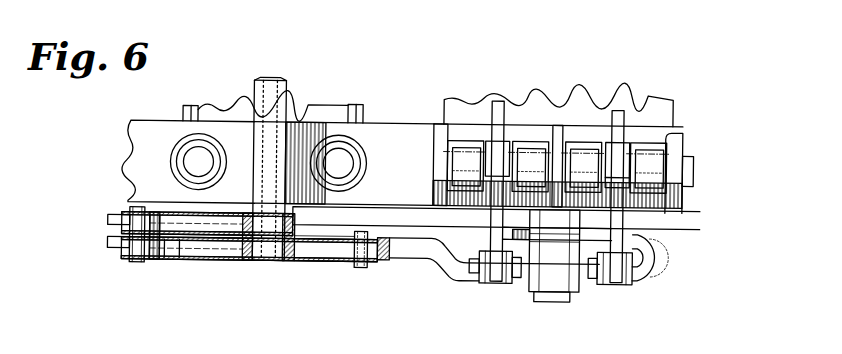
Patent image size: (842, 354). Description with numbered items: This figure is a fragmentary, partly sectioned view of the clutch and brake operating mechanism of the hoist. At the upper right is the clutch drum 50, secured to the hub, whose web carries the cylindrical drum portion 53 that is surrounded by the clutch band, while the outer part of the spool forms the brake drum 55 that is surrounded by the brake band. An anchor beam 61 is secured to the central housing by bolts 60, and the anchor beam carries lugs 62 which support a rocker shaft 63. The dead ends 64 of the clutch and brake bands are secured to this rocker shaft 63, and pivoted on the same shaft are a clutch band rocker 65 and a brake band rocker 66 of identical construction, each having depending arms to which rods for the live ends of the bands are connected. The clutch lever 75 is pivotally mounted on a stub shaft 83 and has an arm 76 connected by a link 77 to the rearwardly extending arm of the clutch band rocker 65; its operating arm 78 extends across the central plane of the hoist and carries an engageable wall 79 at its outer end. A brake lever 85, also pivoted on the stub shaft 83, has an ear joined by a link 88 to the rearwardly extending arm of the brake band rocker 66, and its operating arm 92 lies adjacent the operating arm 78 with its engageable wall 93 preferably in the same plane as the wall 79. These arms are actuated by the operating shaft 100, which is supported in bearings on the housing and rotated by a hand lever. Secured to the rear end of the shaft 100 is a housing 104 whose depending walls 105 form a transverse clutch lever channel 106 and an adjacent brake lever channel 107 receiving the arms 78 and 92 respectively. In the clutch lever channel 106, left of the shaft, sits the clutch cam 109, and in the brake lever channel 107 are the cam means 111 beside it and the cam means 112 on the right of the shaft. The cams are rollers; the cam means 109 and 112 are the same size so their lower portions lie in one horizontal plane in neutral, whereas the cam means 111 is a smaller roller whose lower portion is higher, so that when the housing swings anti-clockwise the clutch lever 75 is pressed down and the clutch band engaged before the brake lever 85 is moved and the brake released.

The clutch drum 50 is at (658, 98).
The cylindrical drum portion 53 is at (604, 122).
The brake drum 55 is at (480, 103).
The bolts 60 is at (198, 160).
The anchor beam 61 is at (388, 120).
The lugs 62 is at (440, 130).
The rocker shaft 63 is at (696, 162).
The dead ends 64 is at (465, 150).
The clutch band rocker 65 is at (624, 142).
The brake band rocker 66 is at (498, 135).
The clutch lever 75 is at (440, 240).
The arm 76 is at (664, 256).
The link 77 is at (625, 284).
The operating arm 78 is at (400, 230).
The engageable wall 79 is at (120, 228).
The stub shaft 83 is at (546, 293).
The brake lever 85 is at (453, 276).
The link 88 is at (510, 282).
The operating arm 92 is at (388, 262).
The engageable wall 93 is at (170, 262).
The operating shaft 100 is at (285, 84).
The housing 104 is at (222, 262).
The depending walls 105 is at (320, 253).
The clutch lever channel 106 is at (176, 222).
The brake lever channel 107 is at (194, 262).
The clutch cam 109 is at (130, 216).
The cam means 111 is at (126, 251).
The cam means 112 is at (352, 252).